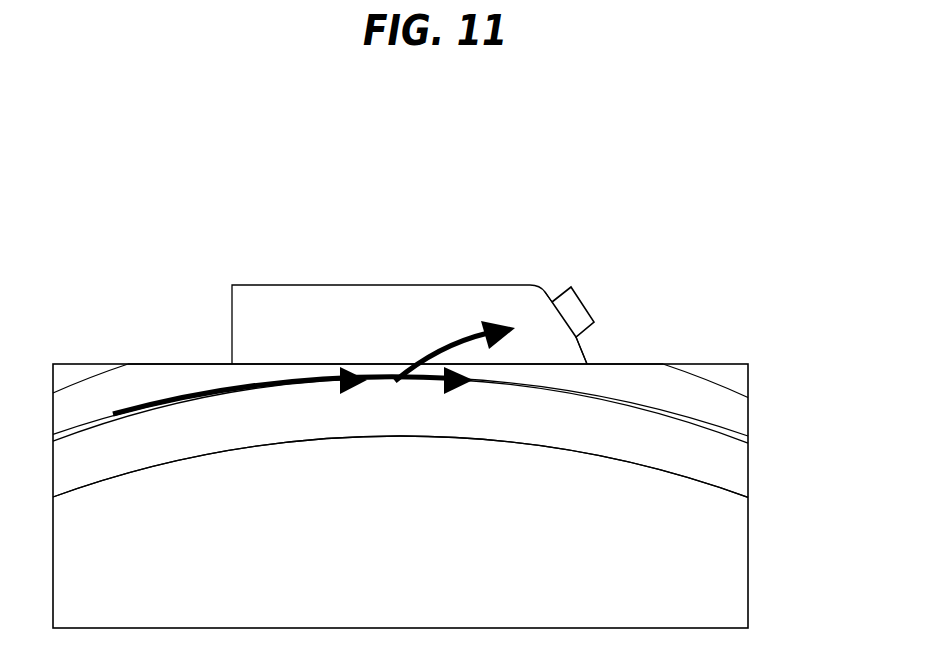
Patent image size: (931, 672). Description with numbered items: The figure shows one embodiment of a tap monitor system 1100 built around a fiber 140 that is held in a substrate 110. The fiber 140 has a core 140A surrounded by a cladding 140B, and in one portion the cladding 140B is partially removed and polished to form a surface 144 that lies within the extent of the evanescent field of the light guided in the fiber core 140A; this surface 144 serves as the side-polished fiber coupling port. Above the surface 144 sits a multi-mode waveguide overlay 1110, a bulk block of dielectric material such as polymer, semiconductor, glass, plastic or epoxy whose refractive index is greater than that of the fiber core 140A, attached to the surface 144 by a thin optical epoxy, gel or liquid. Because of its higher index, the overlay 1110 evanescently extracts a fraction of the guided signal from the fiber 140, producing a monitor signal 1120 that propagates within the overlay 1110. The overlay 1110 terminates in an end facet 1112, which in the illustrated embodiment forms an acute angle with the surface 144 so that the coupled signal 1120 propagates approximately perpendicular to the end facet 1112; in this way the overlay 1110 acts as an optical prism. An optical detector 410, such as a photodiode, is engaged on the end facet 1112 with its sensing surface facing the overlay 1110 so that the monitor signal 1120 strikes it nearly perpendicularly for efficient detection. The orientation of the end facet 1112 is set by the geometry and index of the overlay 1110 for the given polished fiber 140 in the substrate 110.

The tap monitor system 1100 is at (302, 138).
The substrate 110 is at (470, 604).
The fiber 140 is at (301, 460).
The fiber core 140A is at (716, 425).
The cladding 140B is at (588, 434).
The surface 144 is at (633, 363).
The multi-mode waveguide overlay 1110 is at (253, 322).
The end facet 1112 is at (551, 307).
The optical detector 410 is at (587, 308).
The monitor signal 1120 is at (425, 360).